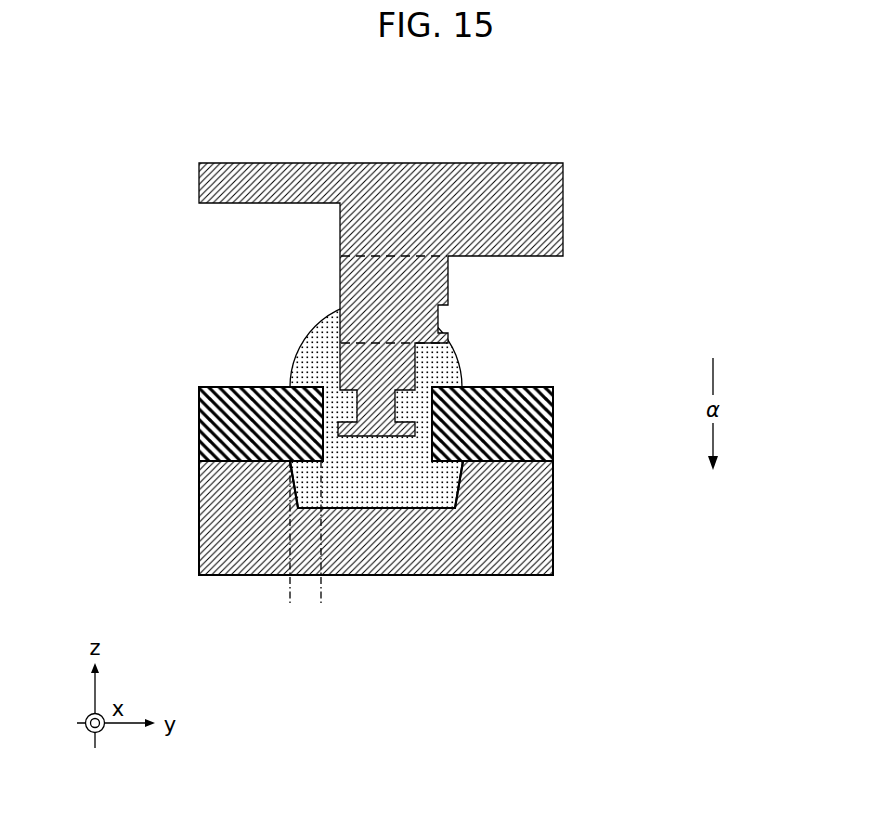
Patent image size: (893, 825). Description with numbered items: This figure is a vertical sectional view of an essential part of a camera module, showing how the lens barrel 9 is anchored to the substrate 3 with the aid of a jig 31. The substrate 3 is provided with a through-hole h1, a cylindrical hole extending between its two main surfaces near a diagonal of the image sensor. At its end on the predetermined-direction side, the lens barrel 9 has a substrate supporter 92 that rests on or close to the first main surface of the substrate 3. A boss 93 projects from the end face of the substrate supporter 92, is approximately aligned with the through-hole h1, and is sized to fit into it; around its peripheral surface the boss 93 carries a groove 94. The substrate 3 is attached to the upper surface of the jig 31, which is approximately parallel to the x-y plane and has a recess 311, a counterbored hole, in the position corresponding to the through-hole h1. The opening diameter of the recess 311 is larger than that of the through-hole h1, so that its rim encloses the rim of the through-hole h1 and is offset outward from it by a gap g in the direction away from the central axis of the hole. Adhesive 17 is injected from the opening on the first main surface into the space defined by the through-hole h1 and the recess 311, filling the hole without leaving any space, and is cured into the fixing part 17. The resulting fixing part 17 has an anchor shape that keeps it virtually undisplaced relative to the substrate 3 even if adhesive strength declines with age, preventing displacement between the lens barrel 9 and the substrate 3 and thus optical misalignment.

The lens barrel 9 is at (582, 160).
The substrate supporter 92 is at (434, 298).
The boss 93 is at (405, 368).
The groove 94 is at (395, 404).
The substrate 3 is at (553, 423).
The fixing part (adhesive) 17 is at (553, 522).
The jig 31 is at (210, 537).
The recess (counterbored hole) 311 is at (447, 478).
The hole (through-hole) h1 is at (332, 383).
The gap g is at (355, 595).